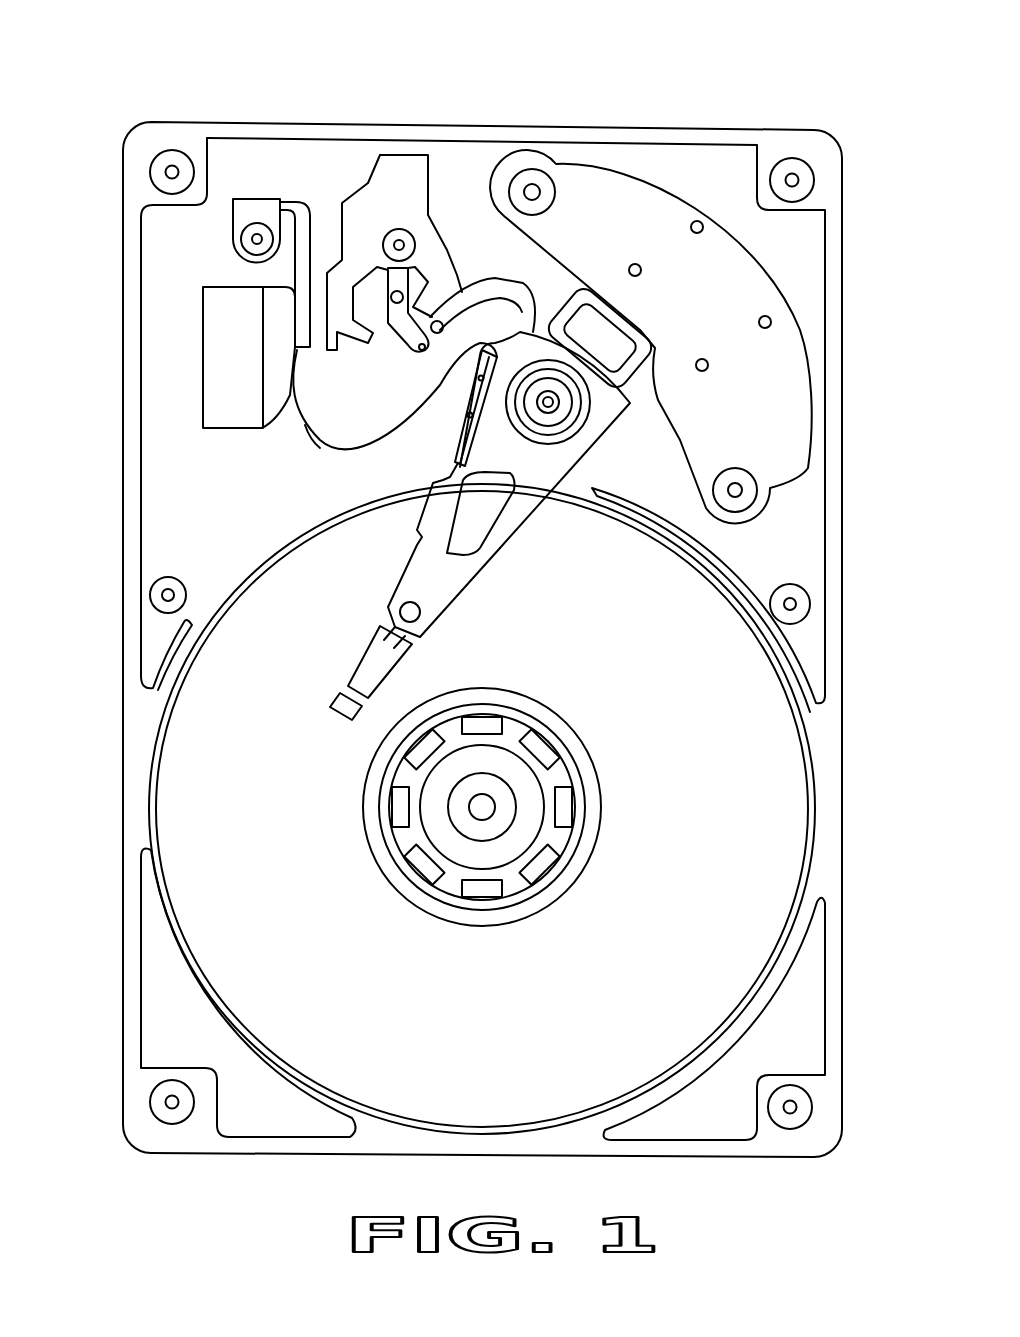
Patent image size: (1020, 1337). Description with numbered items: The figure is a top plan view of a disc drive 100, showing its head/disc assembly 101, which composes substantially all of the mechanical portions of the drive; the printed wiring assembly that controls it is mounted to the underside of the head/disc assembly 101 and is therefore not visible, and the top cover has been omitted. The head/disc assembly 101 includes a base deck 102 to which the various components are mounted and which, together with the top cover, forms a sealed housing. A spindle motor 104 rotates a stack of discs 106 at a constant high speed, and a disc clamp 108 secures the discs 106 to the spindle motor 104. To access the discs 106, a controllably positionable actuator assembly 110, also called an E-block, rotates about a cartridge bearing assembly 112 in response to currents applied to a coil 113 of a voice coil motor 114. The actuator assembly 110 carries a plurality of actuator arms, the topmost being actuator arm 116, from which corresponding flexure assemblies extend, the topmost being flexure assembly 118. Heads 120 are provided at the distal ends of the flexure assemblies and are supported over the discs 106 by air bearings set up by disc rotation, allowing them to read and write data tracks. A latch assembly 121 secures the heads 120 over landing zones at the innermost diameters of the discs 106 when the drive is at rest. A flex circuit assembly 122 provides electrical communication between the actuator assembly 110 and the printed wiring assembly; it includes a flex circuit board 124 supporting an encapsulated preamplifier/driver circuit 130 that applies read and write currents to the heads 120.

The disc drive 100 is at (236, 96).
The head/disc assembly (HDA) 101 is at (118, 248).
The base deck 102 is at (215, 492).
The spindle motor 104 is at (496, 842).
The discs 106 is at (732, 892).
The disc clamp 108 is at (375, 852).
The actuator assembly 110 is at (524, 482).
The cartridge bearing assembly 112 is at (557, 420).
The coil 113 is at (648, 352).
The voice coil motor (VCM) 114 is at (585, 232).
The actuator arm 116 is at (420, 587).
The flexure assembly 118 is at (368, 672).
The heads 120 is at (338, 705).
The latch assembly 121 is at (400, 178).
The flex circuit assembly 122 is at (316, 460).
The flex circuit board 124 is at (452, 450).
The preamplifier/driver circuit 130 is at (462, 420).